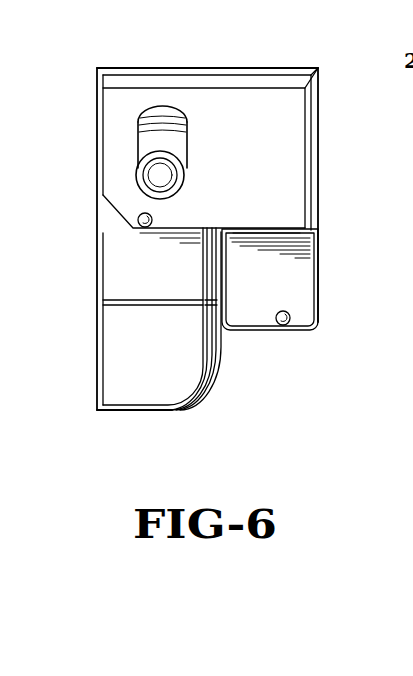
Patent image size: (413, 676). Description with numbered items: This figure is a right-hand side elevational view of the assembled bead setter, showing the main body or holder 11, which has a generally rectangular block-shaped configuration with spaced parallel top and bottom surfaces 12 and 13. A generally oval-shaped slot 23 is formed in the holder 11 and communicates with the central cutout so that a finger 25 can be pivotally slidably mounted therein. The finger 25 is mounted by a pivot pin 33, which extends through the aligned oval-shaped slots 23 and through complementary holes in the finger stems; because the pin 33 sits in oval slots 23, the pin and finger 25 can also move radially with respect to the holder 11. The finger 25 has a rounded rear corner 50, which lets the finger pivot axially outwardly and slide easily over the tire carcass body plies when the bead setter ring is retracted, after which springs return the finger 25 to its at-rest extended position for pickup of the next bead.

The main body or holder 11 is at (326, 209).
The top surface 12 is at (163, 68).
The bottom surface 13 is at (255, 333).
The oval-shaped slots 23 is at (140, 126).
The pivot pin 33 is at (158, 174).
The rounded rear corner 50 is at (200, 392).
The finger 25 is at (132, 412).